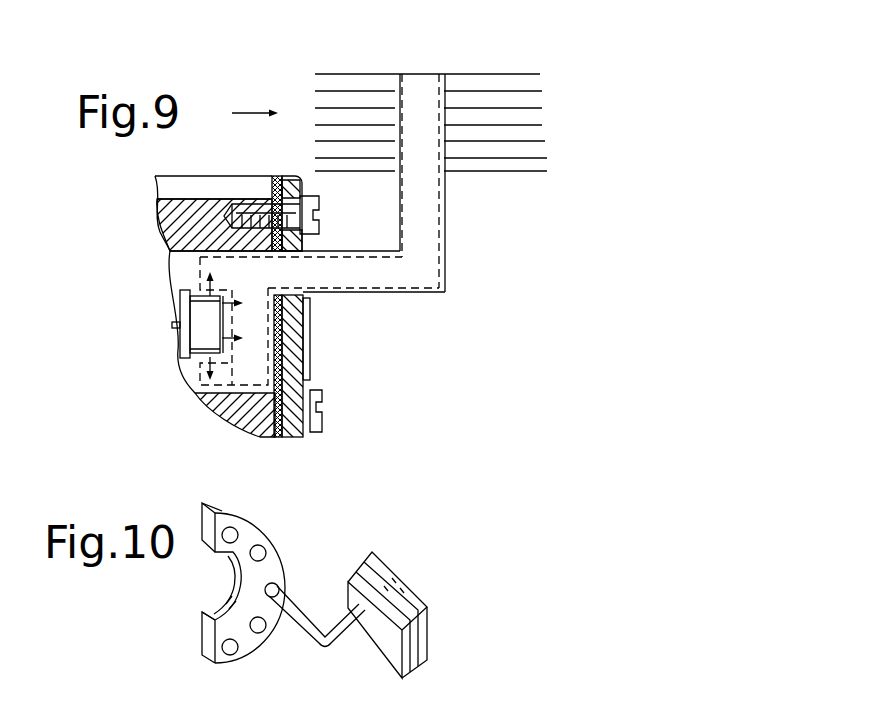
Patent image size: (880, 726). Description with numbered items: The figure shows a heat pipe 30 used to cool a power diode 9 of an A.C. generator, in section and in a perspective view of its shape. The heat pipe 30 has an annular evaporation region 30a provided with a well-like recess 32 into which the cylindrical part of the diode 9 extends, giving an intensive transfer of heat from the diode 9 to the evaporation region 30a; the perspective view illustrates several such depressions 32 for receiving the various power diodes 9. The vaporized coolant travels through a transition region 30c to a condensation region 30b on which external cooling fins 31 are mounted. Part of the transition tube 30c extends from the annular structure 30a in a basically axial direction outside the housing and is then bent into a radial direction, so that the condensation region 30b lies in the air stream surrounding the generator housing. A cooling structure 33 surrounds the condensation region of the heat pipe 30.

In FIG. 9, the power diode 9 is at (200, 337).
In FIG. 9, the heat pipe 30 is at (320, 305).
In FIG. 10, the heat pipe 30 is at (292, 563).
In FIG. 9, the evaporation region 30a is at (252, 370).
In FIG. 10, the evaporation region 30a is at (248, 650).
In FIG. 9, the condensation region 30b is at (415, 95).
In FIG. 9, the transition region 30c is at (403, 276).
In FIG. 9, the external cooling fins 31 is at (500, 90).
In FIG. 9, the well-like recess 32 is at (235, 348).
In FIG. 10, the well-like recess 32 is at (231, 534).
In FIG. 10, the cooling structure 33 is at (413, 596).